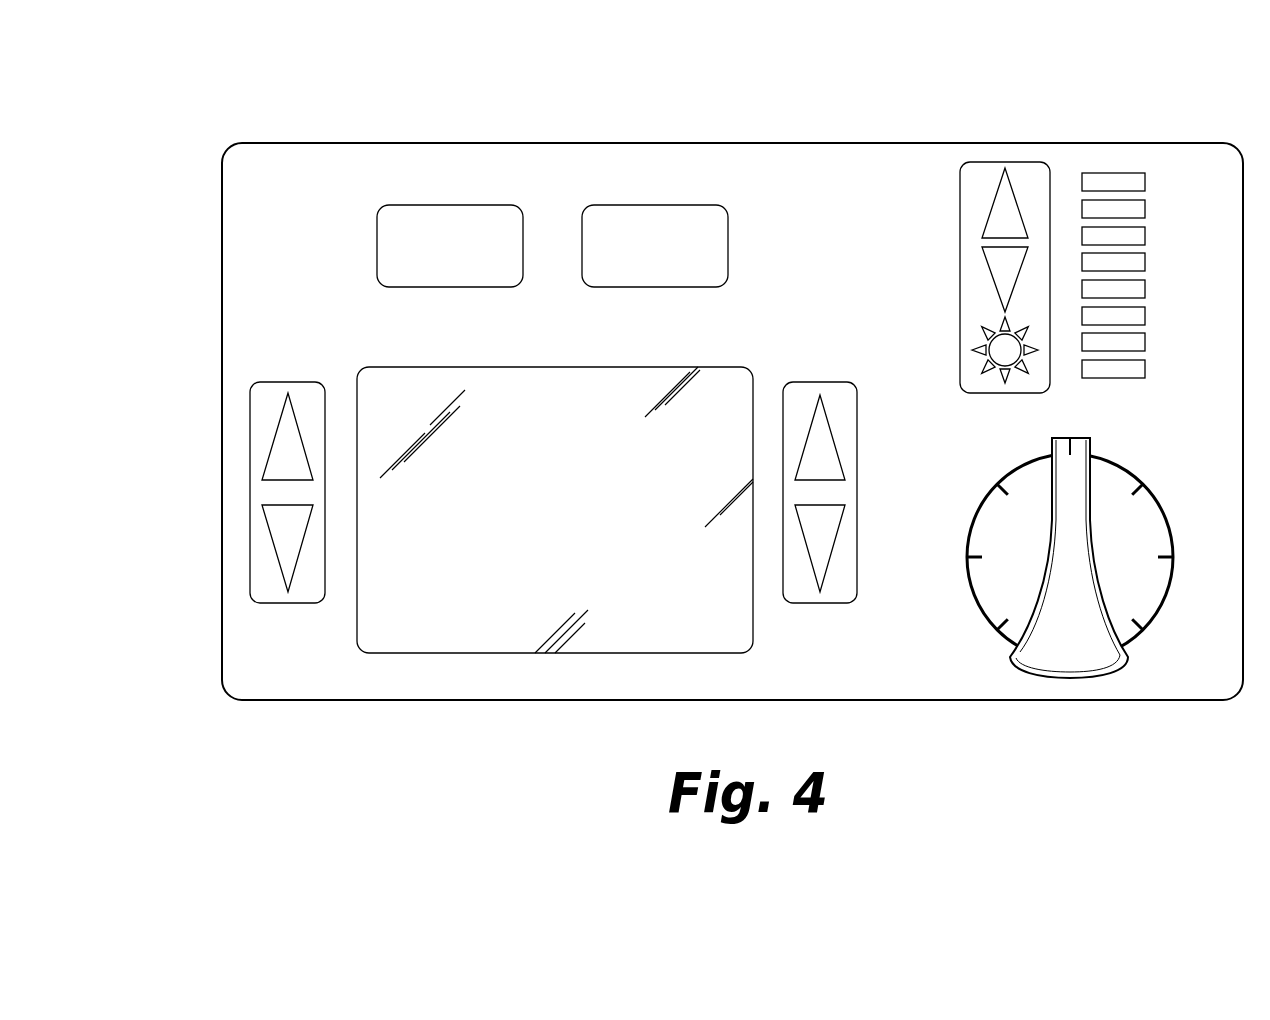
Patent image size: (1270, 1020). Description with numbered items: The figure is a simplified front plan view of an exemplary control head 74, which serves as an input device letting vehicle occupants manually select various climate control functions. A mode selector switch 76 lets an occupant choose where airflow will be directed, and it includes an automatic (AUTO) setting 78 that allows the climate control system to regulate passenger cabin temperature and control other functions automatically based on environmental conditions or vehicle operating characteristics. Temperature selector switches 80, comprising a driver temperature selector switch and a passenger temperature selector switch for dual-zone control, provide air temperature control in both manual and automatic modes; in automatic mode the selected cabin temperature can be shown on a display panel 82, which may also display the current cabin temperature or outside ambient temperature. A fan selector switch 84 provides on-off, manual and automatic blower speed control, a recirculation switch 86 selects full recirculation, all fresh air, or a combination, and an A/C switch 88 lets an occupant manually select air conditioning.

The control head 74 is at (826, 78).
The mode selector switch 76 is at (1073, 678).
The automatic (AUTO) setting 78 is at (969, 682).
The temperature selector switches 80 is at (250, 412).
The display panel 82 is at (715, 367).
The fan selector switch 84 is at (1005, 162).
The recirculation switch 86 is at (448, 205).
The A/C switch 88 is at (657, 205).